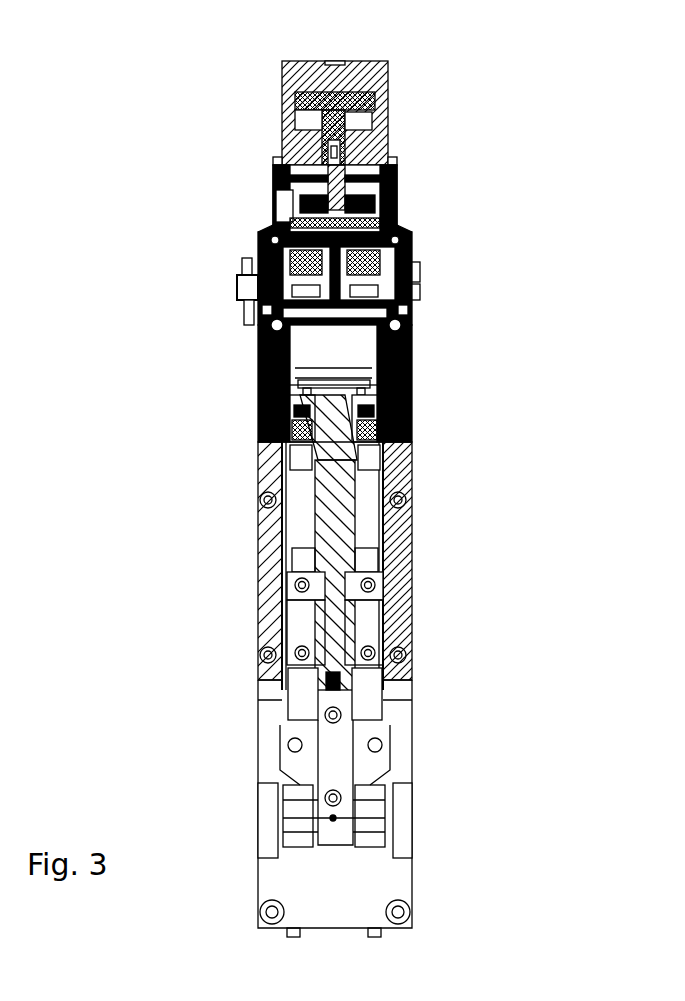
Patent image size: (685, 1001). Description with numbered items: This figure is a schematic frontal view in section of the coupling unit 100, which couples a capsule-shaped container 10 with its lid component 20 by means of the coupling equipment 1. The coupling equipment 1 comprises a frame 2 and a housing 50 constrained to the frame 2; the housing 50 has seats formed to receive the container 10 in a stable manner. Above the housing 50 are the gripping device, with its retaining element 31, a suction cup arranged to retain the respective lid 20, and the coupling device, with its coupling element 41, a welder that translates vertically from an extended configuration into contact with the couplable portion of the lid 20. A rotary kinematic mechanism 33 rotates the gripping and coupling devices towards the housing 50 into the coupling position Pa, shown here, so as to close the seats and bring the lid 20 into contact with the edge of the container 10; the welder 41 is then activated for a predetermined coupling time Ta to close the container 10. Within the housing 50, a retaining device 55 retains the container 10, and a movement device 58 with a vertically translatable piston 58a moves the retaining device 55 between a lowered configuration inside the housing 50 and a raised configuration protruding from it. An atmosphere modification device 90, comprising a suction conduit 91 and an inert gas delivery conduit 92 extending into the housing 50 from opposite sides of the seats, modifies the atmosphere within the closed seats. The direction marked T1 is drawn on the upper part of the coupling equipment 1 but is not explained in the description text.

The coupling equipment 1 is at (268, 126).
The frame 2 is at (250, 578).
The container 10 is at (305, 362).
The component 20 is at (253, 305).
The retaining element 31 is at (410, 248).
The rotary kinematic mechanism 33 is at (412, 310).
The coupling element 41 is at (412, 299).
The housing 50 is at (412, 555).
The retaining device 55 is at (405, 448).
The movement device 58 is at (342, 640).
The piston 58a is at (337, 607).
The atmosphere modification device 90 is at (258, 332).
The suction conduit 91 is at (255, 325).
The inert gas delivery conduit 92 is at (412, 320).
The coupling unit 100 is at (438, 162).
The coupling position Pa is at (247, 256).
The coupling time Ta is at (413, 290).
The force direction T1 is at (311, 122).